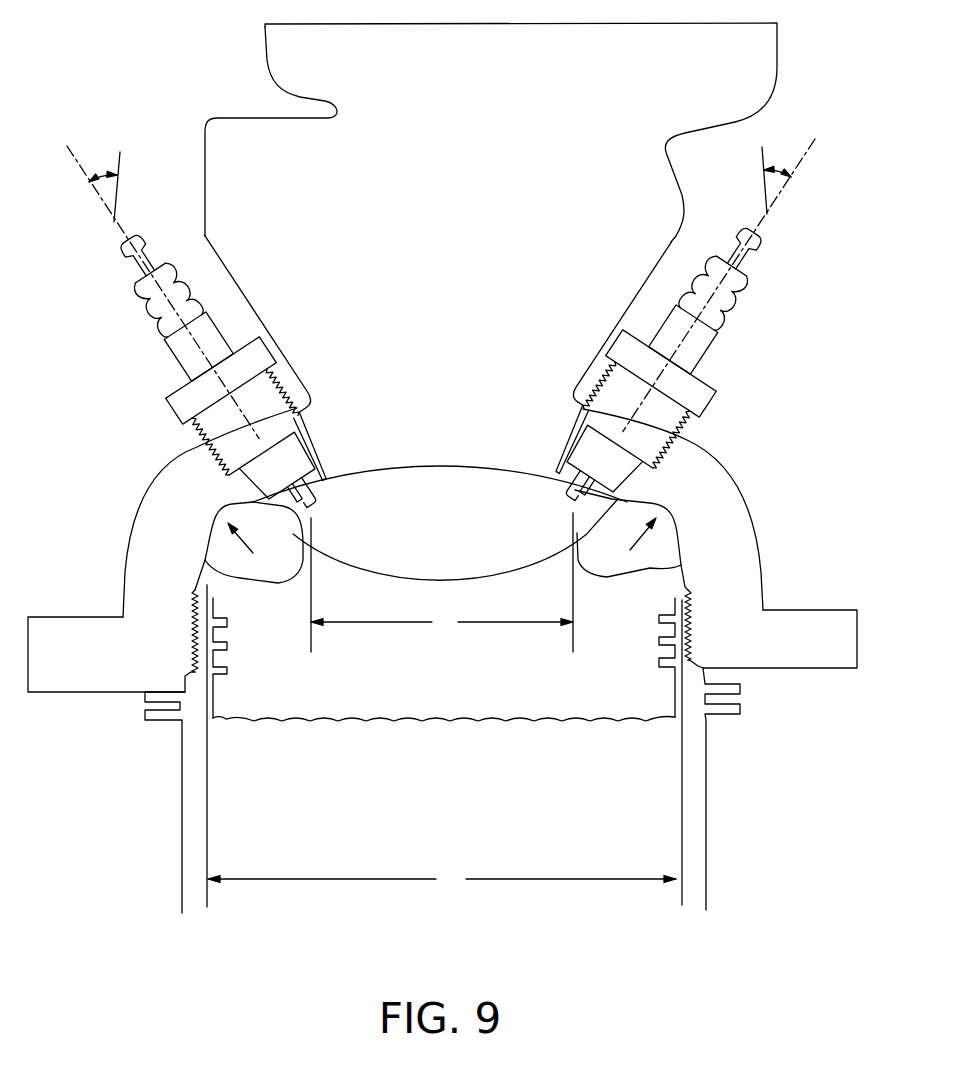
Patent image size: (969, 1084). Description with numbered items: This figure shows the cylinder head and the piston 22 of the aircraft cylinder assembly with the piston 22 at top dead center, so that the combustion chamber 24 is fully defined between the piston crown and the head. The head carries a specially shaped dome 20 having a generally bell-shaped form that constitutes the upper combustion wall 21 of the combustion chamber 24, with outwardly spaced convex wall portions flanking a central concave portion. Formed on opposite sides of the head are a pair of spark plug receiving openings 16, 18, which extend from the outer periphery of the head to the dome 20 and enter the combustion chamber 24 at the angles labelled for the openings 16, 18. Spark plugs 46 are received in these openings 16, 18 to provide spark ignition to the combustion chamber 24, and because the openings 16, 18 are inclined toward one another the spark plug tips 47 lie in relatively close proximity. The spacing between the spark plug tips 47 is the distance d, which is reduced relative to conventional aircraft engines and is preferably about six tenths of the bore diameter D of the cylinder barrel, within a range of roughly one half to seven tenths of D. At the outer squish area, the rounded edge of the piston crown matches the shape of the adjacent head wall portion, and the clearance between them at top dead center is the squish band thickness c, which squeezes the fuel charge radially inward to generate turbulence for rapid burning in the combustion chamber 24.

The spark plug receiving opening 16 is at (103, 178).
The spark plug receiving opening 18 is at (781, 172).
The dome 20 is at (463, 460).
The upper combustion wall 21 is at (408, 467).
The piston 22 is at (598, 705).
The combustion chamber 24 is at (434, 531).
The spark plug 46 is at (185, 357).
The spark plug tip 47 is at (220, 570).
The squish band thickness c is at (214, 502).
The distance between spark plug tips d is at (442, 582).
The bore diameter D is at (442, 880).